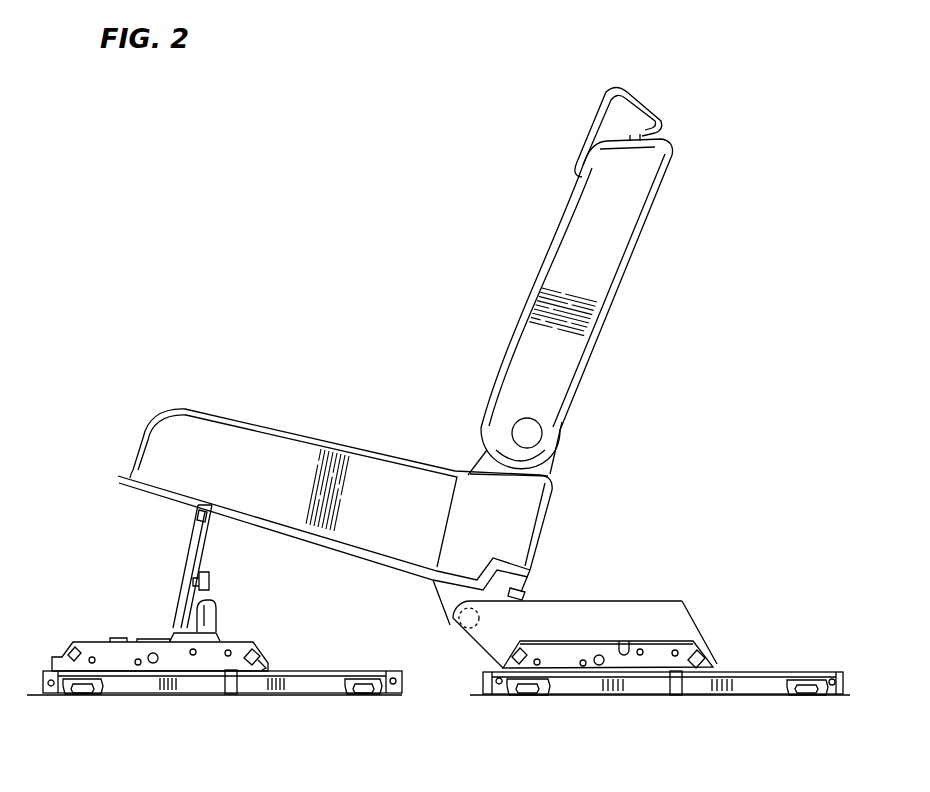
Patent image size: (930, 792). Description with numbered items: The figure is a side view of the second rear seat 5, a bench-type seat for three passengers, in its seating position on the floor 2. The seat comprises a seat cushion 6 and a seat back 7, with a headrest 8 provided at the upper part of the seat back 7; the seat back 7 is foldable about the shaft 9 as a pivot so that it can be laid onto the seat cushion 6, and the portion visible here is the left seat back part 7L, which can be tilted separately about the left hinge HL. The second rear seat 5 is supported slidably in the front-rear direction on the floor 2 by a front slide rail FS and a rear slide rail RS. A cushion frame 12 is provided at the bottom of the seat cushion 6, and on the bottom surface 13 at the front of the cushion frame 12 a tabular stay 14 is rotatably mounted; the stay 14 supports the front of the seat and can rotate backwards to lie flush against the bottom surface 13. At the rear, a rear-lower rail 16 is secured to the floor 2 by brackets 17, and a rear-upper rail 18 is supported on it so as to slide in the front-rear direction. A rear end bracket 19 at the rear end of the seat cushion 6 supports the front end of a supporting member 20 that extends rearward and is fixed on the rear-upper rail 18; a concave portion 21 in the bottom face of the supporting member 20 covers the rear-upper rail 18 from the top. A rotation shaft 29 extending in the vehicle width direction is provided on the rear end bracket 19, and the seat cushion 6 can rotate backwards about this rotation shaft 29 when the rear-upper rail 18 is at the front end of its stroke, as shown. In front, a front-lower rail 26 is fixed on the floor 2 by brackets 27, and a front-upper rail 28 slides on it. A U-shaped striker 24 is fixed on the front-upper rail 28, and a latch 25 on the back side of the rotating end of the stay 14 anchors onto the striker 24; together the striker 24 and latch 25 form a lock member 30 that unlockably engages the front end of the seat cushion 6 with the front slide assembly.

The floor 2 is at (52, 690).
The second rear seat 5 is at (452, 212).
The seat cushion 6 is at (262, 428).
The seat back 7 is at (533, 279).
The left seat back part 7L is at (620, 272).
The headrest 8 is at (596, 112).
The shaft 9 is at (542, 434).
The cushion frame 12 is at (276, 536).
The bottom surface 13 is at (379, 562).
The stay 14 is at (192, 542).
The rear-lower rail 16 is at (762, 672).
The bracket 17 is at (524, 695).
The rear-upper rail 18 is at (650, 660).
The rear end bracket 19 is at (523, 590).
The supporting member 20 is at (598, 601).
The concave portion 21 is at (640, 628).
The striker 24 is at (215, 627).
The latch 25 is at (205, 598).
The front-lower rail 26 is at (330, 670).
The bracket 27 is at (84, 694).
The front-upper rail 28 is at (248, 660).
The rotation shaft 29 is at (468, 630).
The lock member 30 is at (160, 605).
The front slide rail FS is at (115, 626).
The left hinge HL is at (555, 471).
The rear slide rail RS is at (683, 595).